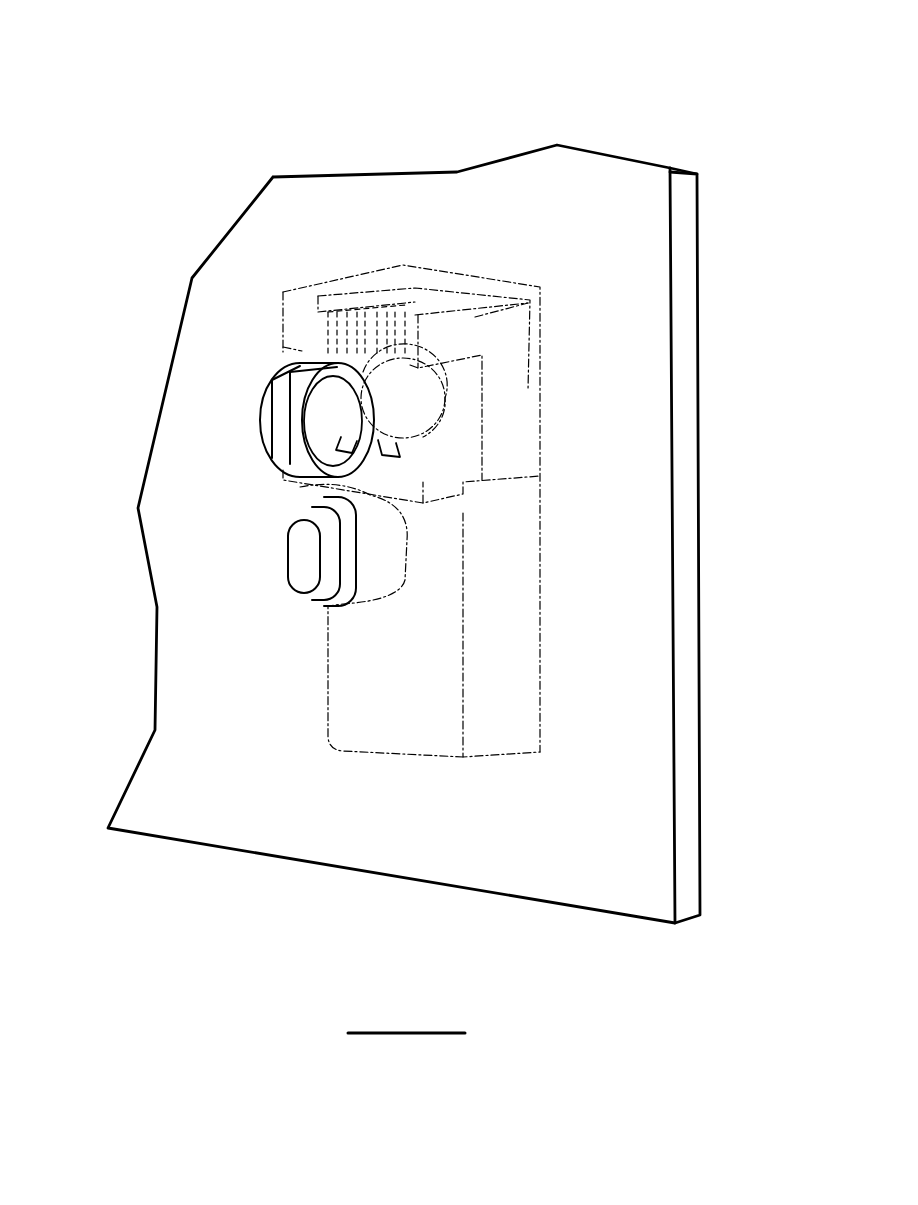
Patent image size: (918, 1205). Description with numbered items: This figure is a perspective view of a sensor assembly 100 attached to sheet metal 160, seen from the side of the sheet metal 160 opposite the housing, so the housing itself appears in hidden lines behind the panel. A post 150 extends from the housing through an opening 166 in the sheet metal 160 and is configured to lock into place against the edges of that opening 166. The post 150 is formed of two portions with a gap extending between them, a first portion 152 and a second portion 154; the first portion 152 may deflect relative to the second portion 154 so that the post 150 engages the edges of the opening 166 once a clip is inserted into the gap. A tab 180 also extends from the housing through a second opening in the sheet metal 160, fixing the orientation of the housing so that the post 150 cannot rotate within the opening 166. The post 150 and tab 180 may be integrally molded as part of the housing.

The sensor assembly 100 is at (423, 520).
The post 150 is at (345, 461).
The first portion 152 is at (213, 410).
The second portion 154 is at (538, 420).
The sheet metal 160 is at (404, 471).
The opening 166 is at (584, 475).
The tab 180 is at (199, 551).